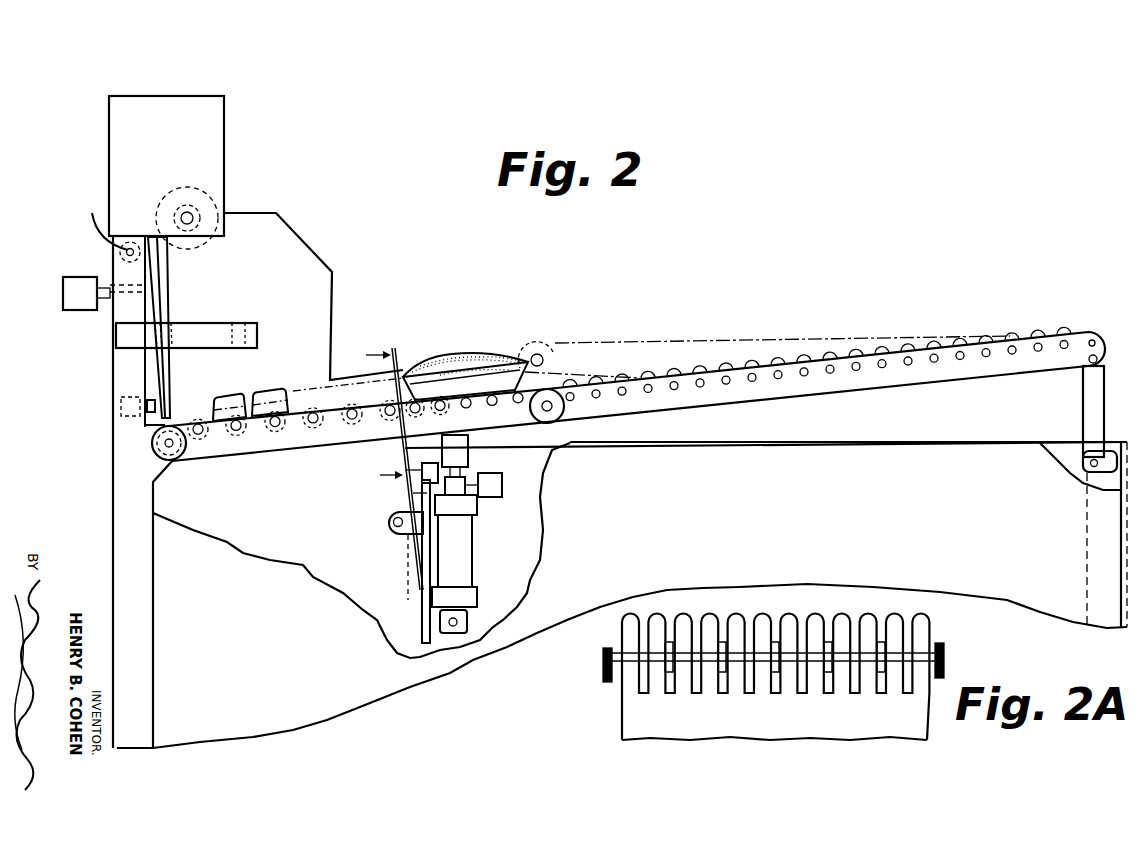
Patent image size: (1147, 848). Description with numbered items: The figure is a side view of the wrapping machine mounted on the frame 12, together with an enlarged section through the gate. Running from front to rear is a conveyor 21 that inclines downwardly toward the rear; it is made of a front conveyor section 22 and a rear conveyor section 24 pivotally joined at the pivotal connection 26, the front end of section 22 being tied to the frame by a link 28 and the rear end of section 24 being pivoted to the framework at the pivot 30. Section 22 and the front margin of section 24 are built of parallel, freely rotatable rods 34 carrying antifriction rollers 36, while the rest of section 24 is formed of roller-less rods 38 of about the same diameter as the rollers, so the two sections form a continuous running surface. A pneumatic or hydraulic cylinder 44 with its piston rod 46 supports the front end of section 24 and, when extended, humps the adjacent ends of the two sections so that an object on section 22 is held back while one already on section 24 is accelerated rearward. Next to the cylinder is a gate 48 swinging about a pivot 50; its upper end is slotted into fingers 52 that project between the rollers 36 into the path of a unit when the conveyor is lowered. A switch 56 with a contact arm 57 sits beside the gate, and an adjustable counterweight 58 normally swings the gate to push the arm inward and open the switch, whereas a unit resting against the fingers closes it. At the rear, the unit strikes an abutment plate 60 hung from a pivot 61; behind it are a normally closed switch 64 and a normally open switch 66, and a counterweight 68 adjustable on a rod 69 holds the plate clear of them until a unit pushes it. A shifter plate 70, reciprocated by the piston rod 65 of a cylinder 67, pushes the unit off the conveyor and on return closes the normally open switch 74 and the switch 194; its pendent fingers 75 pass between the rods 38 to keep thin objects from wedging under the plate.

In FIG. 2, the frame 12 is at (113, 472).
In FIG. 2, the conveyor 21 is at (708, 411).
In FIG. 2, the front conveyor section 22 is at (600, 343).
In FIG. 2, the rear conveyor section 24 is at (263, 438).
In FIG. 2, the pivotal connection 26 is at (552, 410).
In FIG. 2, the link 28 is at (1083, 392).
In FIG. 2, the pivot 30 is at (165, 444).
In FIG. 2, the rods 34 is at (898, 368).
In FIG. 2A, the rods 34 is at (643, 657).
In FIG. 2, the antifriction rollers 36 is at (698, 372).
In FIG. 2A, the antifriction rollers 36 is at (829, 640).
In FIG. 2, the rods 38 is at (235, 436).
In FIG. 2, the cylinder 44 is at (470, 554).
In FIG. 2, the piston rod 46 is at (502, 477).
In FIG. 2, the gate 48 is at (415, 498).
In FIG. 2A, the gate 48 is at (763, 725).
In FIG. 2, the pivot 50 is at (393, 522).
In FIG. 2, the fingers 52 is at (396, 394).
In FIG. 2A, the fingers 52 is at (705, 620).
In FIG. 2, the switch 56 is at (468, 462).
In FIG. 2, the contact arm 57 is at (405, 461).
In FIG. 2, the adjustable counterweight 58 is at (495, 497).
In FIG. 2, the abutment plate 60 is at (158, 302).
In FIG. 2, the pivot 61 is at (94, 225).
In FIG. 2, the normally closed switch 64 is at (145, 420).
In FIG. 2, the piston rod 65 is at (192, 214).
In FIG. 2, the normally open switch 66 is at (120, 398).
In FIG. 2, the cylinder 67 is at (187, 210).
In FIG. 2, the counterweight 68 is at (63, 288).
In FIG. 2, the rod 69 is at (120, 252).
In FIG. 2, the shifter plate 70 is at (290, 240).
In FIG. 2, the normally open switch 74 is at (238, 323).
In FIG. 2, the pendent fingers 75 is at (214, 400).
In FIG. 2, the switch 194 is at (255, 335).